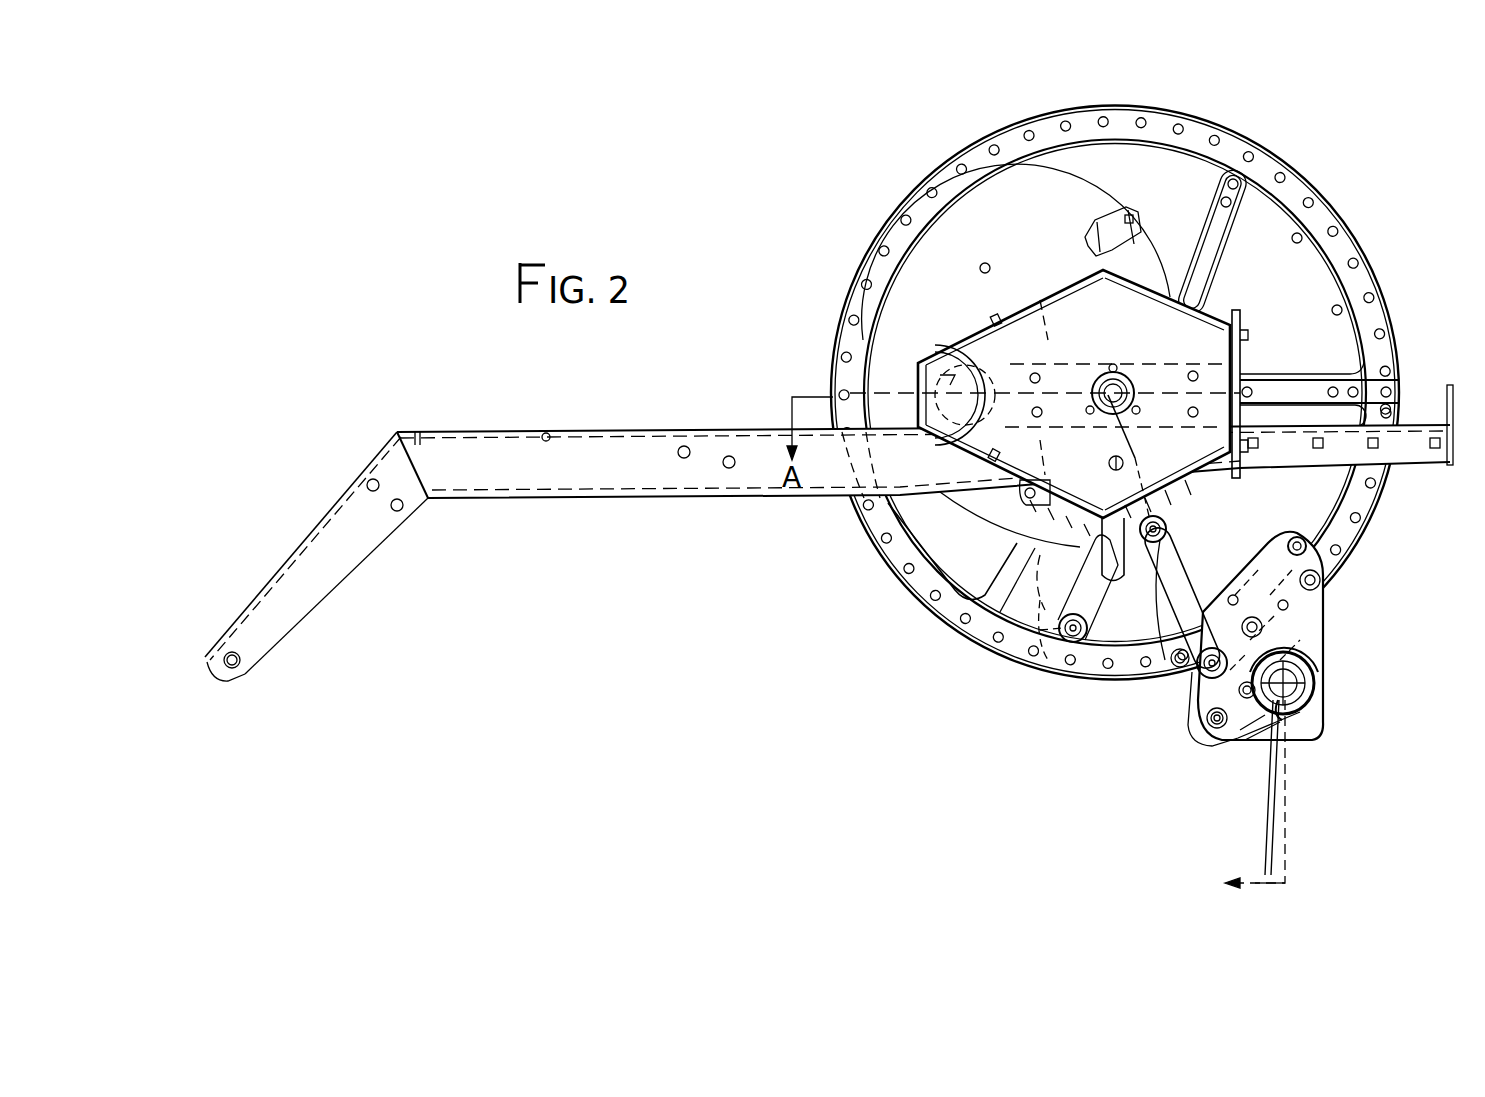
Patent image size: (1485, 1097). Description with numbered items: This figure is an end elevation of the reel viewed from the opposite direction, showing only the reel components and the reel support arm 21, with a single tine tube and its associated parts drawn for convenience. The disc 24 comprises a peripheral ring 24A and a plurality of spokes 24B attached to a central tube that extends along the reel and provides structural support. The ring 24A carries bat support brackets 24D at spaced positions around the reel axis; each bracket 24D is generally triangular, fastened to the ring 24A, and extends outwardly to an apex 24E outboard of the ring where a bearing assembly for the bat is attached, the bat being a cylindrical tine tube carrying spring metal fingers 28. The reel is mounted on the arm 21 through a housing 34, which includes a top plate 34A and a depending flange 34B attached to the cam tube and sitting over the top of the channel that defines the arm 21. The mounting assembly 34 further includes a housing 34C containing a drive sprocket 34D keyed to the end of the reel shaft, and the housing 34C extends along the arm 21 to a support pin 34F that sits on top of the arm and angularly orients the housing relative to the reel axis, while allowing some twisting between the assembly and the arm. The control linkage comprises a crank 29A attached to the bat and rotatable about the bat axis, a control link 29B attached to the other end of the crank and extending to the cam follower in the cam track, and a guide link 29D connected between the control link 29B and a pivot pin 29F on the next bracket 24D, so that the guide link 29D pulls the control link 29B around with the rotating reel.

The arm 21 is at (748, 480).
The disc 24 is at (893, 215).
The peripheral ring 24A is at (1018, 130).
The spokes 24B is at (1213, 232).
The bat support bracket 24D is at (1325, 620).
The apex 24E is at (1310, 725).
The fingers 28 is at (1276, 850).
The crank 29A is at (1240, 740).
The control link 29B is at (1175, 600).
The guide link 29D is at (1105, 612).
The pivot pin 29F is at (1062, 640).
The housing 34 is at (993, 320).
The top plate 34A is at (1000, 462).
The depending flange 34B is at (1035, 485).
The housing 34C is at (1013, 322).
The drive sprocket 34D is at (1052, 326).
The support pin 34F is at (950, 372).